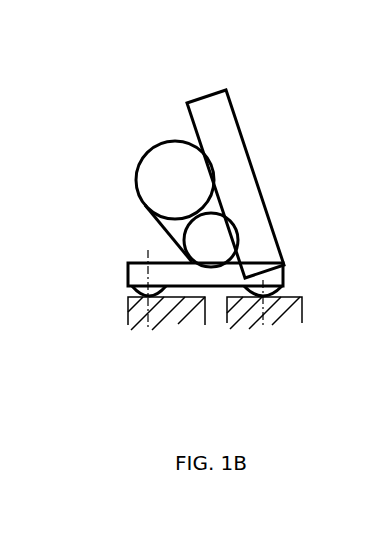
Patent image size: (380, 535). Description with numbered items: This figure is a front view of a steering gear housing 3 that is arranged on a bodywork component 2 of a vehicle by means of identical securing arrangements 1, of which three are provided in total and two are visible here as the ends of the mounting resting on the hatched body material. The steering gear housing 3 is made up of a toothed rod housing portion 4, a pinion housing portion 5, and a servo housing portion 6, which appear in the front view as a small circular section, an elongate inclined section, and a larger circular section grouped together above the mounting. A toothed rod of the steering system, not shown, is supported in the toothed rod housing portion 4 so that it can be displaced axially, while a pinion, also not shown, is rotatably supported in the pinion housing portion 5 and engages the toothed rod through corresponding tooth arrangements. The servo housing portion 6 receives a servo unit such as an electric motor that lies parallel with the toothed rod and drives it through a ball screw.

The securing arrangement 1 is at (112, 290).
The bodywork component 2 is at (177, 322).
The steering gear housing 3 is at (234, 156).
The toothed rod housing portion 4 is at (213, 241).
The pinion housing portion 5 is at (223, 105).
The servo housing portion 6 is at (158, 162).